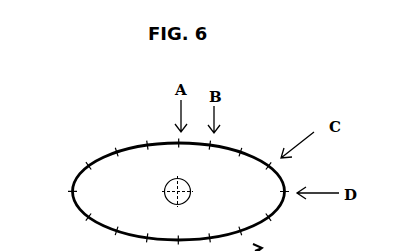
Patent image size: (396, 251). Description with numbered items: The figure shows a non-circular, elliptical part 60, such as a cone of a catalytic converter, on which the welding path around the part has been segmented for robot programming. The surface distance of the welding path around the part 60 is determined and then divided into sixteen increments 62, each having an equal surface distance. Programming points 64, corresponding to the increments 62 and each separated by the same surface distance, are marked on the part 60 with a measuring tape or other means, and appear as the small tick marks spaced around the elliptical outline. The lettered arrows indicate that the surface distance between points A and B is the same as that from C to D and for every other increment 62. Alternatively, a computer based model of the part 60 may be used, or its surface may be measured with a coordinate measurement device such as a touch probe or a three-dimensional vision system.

The non-circular part 60 is at (155, 147).
The increments 62 is at (97, 161).
The programming points 64 is at (178, 192).